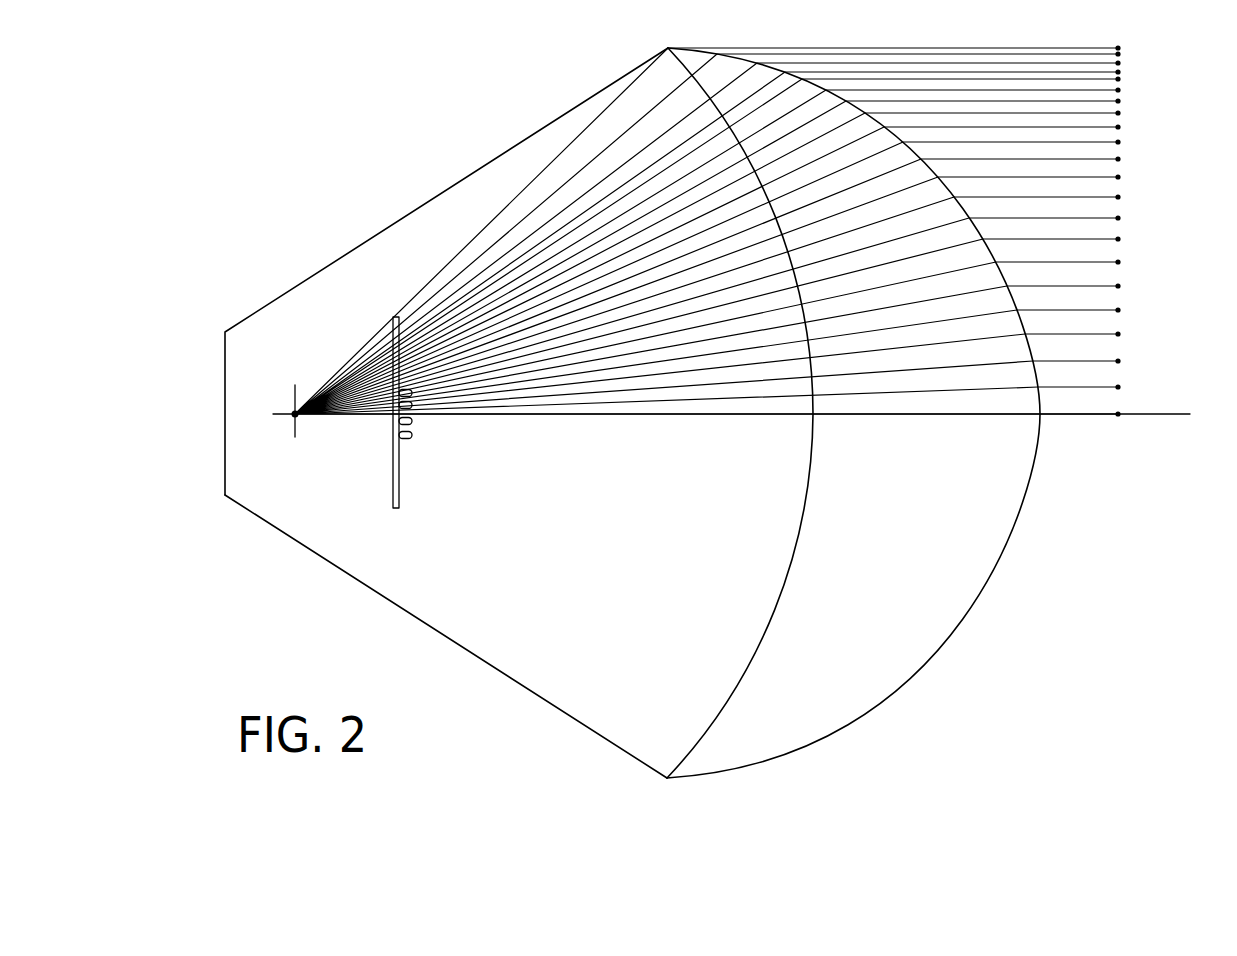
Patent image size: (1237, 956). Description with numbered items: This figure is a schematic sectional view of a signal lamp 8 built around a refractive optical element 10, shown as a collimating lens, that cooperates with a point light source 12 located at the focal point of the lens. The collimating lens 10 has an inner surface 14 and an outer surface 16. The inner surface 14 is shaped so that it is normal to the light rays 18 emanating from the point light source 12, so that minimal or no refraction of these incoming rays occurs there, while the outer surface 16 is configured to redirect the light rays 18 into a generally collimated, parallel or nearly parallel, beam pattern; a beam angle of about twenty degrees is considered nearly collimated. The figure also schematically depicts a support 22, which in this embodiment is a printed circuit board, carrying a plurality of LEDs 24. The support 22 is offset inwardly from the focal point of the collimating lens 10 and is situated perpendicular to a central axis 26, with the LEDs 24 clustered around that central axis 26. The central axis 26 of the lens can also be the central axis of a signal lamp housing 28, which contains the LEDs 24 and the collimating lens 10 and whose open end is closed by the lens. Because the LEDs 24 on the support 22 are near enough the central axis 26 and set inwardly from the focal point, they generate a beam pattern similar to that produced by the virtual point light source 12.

The signal lamp 8 is at (340, 114).
The refractive optical element 10 is at (872, 413).
The point light source 12 is at (293, 418).
The inner surface 14 is at (793, 560).
The outer surface 16 is at (1003, 563).
The light rays 18 is at (668, 388).
The support 22 is at (400, 479).
The LEDs 24 is at (412, 436).
The central axis 26 is at (1155, 413).
The signal lamp housing 28 is at (538, 694).